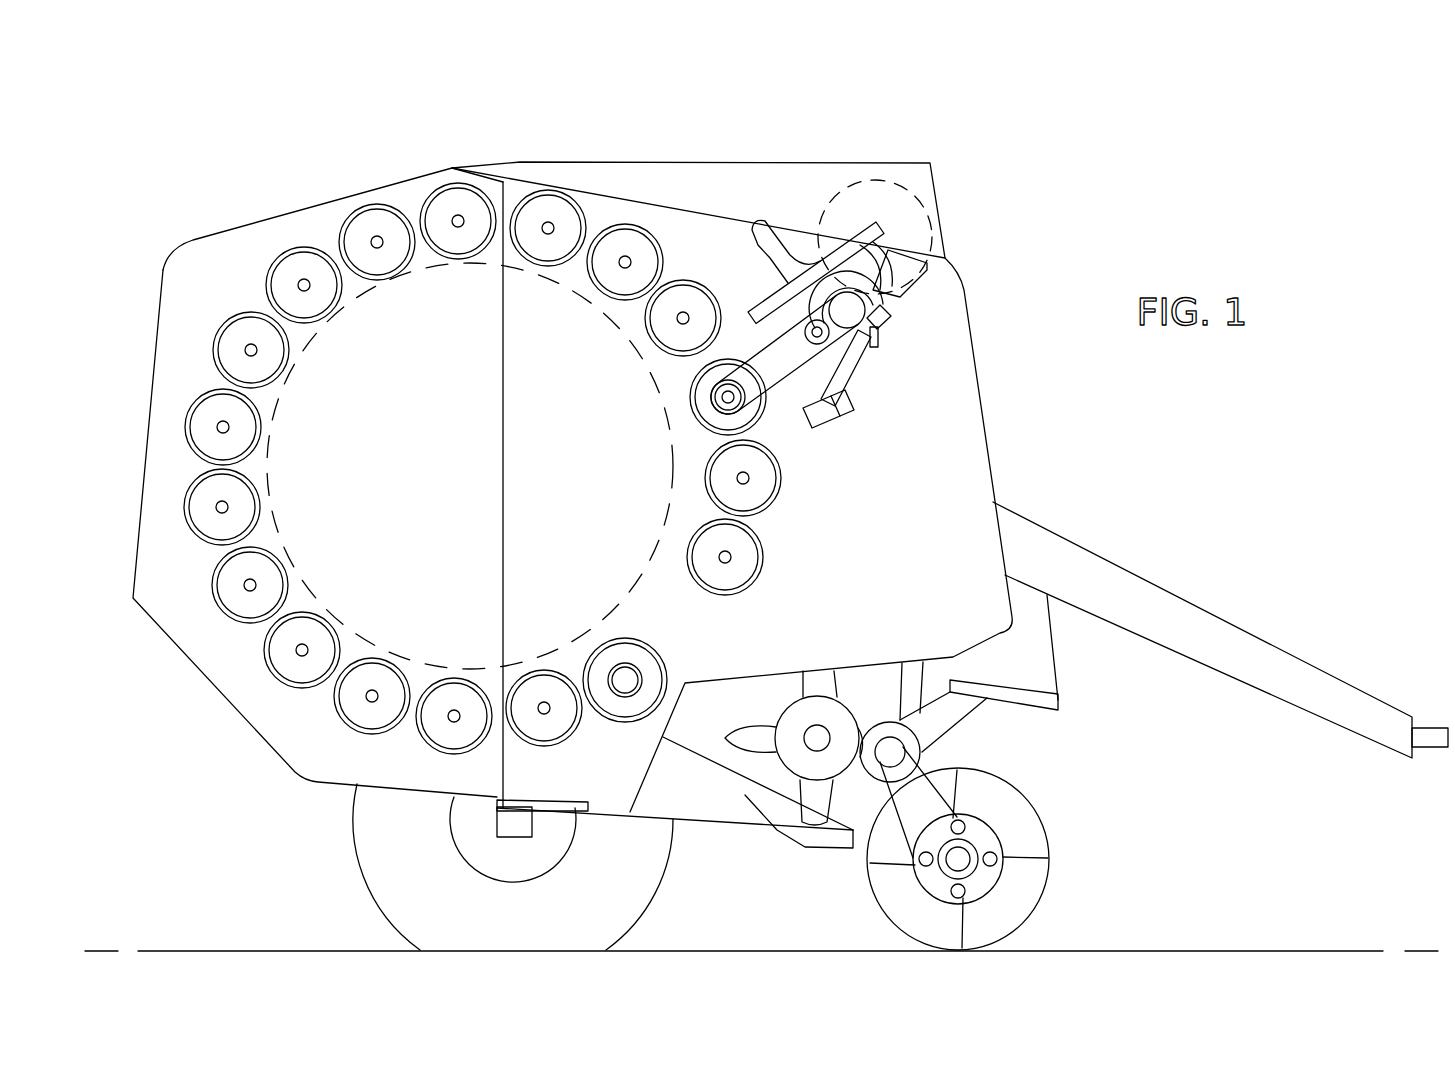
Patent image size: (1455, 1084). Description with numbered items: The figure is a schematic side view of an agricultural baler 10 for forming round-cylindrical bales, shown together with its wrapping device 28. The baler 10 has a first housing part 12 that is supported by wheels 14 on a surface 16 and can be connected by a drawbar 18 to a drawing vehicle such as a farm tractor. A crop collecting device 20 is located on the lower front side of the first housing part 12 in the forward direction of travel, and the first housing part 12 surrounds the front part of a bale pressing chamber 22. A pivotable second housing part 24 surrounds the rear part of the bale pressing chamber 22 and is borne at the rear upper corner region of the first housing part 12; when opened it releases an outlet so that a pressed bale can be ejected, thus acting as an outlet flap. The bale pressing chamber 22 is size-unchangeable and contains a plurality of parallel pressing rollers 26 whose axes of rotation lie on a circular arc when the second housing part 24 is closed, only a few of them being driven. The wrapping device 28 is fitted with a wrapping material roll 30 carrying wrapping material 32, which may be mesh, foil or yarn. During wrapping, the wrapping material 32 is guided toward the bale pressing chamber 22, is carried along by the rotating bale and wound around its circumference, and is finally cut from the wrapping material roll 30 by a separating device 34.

The baler 10 is at (277, 102).
The first housing part 12 is at (550, 484).
The wheels 14 is at (412, 853).
The surface 16 is at (1270, 951).
The drawbar 18 is at (1295, 668).
The crop collecting device 20 is at (793, 873).
The bale pressing chamber 22 is at (545, 327).
The second housing part 24 is at (367, 484).
The pressing rollers 26 is at (260, 366).
The wrapping device 28 is at (807, 197).
The wrapping material roll 30 is at (897, 198).
The wrapping material 32 is at (848, 182).
The separating device 34 is at (870, 397).